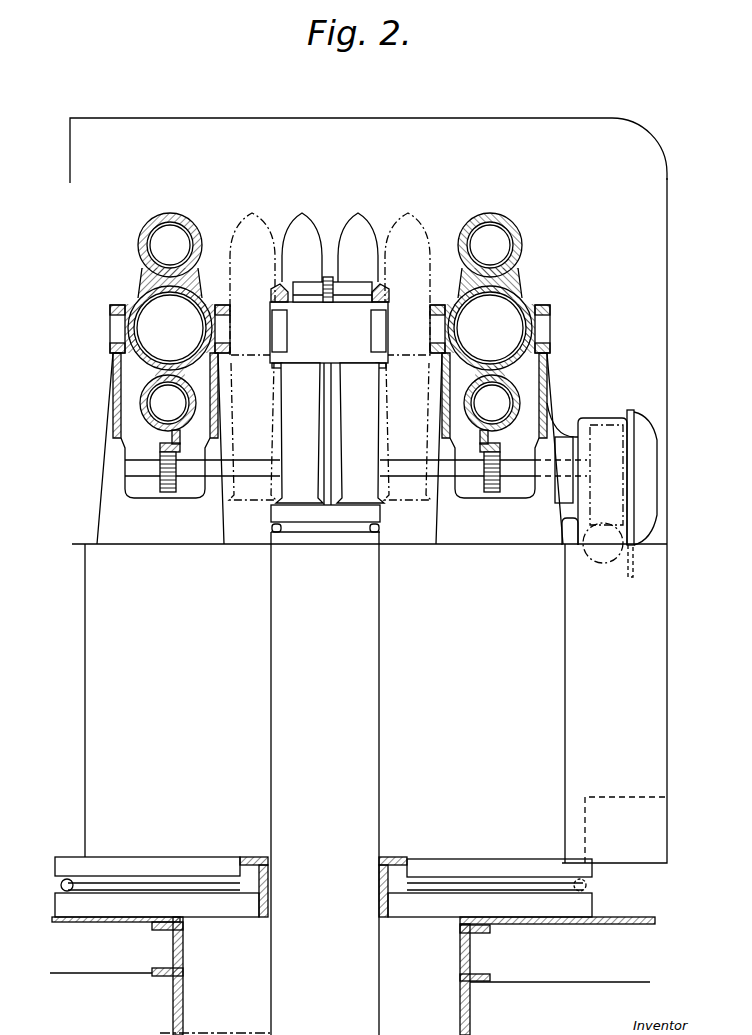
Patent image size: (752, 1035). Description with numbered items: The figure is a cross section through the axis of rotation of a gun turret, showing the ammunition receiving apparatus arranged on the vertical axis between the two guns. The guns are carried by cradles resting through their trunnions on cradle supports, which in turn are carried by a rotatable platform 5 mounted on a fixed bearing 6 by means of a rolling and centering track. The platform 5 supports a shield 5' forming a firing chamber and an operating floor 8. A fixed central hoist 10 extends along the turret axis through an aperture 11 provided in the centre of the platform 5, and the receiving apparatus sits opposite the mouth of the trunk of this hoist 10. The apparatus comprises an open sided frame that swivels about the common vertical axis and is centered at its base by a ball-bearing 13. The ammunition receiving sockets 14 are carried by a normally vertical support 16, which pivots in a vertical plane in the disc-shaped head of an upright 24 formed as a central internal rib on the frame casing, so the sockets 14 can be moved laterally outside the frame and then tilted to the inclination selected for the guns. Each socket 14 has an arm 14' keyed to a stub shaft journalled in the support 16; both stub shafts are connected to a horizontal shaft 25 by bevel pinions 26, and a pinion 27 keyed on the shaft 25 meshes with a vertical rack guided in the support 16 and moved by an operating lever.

The rotatable platform 5 is at (609, 520).
The shield 5' is at (368, 137).
The fixed bearing 6 is at (120, 908).
The operating floor 8 is at (148, 543).
The fixed central hoist 10 is at (280, 607).
The aperture 11 is at (263, 922).
The ball-bearing 13 is at (272, 525).
The ammunition receiving sockets 14 is at (328, 433).
The arm 14' is at (329, 332).
The support 16 is at (329, 294).
The upright 24 is at (331, 442).
The horizontal shaft 25 is at (352, 288).
The bevel pinions 26 is at (273, 295).
The pinion 27 is at (329, 281).